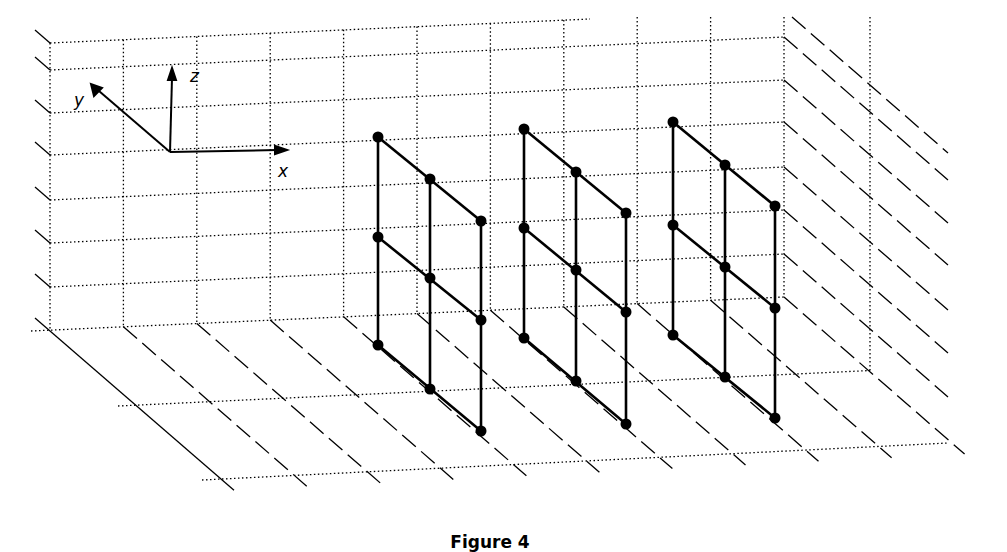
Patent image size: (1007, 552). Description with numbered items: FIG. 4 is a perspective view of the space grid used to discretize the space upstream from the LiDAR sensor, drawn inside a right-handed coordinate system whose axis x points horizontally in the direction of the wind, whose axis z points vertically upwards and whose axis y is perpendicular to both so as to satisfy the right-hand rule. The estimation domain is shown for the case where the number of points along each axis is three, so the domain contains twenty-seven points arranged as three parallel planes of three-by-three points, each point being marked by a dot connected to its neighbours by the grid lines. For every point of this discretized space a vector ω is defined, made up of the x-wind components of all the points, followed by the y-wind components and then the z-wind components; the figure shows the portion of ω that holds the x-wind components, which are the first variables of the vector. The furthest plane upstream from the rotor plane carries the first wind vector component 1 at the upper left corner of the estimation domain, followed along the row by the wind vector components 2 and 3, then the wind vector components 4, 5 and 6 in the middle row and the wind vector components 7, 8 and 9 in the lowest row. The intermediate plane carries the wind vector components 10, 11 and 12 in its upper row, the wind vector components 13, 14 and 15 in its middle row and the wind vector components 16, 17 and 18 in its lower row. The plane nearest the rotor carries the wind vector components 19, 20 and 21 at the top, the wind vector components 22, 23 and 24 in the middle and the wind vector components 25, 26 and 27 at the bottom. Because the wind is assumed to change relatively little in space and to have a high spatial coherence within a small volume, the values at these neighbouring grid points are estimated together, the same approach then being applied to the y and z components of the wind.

The wind vector component 1 is at (683, 117).
The wind vector component 2 is at (736, 159).
The wind vector component 3 is at (786, 202).
The wind vector component 4 is at (684, 221).
The wind vector component 5 is at (736, 263).
The wind vector component 6 is at (786, 303).
The wind vector component 7 is at (684, 330).
The wind vector component 8 is at (736, 373).
The wind vector component 9 is at (786, 414).
The wind vector component 10 is at (537, 124).
The wind vector component 11 is at (589, 166).
The wind vector component 12 is at (639, 207).
The wind vector component 13 is at (537, 224).
The wind vector component 14 is at (589, 266).
The wind vector component 15 is at (639, 306).
The wind vector component 16 is at (537, 334).
The wind vector component 17 is at (589, 376).
The wind vector component 18 is at (639, 423).
The wind vector component 19 is at (391, 132).
The wind vector component 20 is at (443, 174).
The wind vector component 21 is at (494, 216).
The wind vector component 22 is at (391, 232).
The wind vector component 23 is at (443, 273).
The wind vector component 24 is at (494, 315).
The wind vector component 25 is at (391, 340).
The wind vector component 26 is at (443, 384).
The wind vector component 27 is at (494, 426).